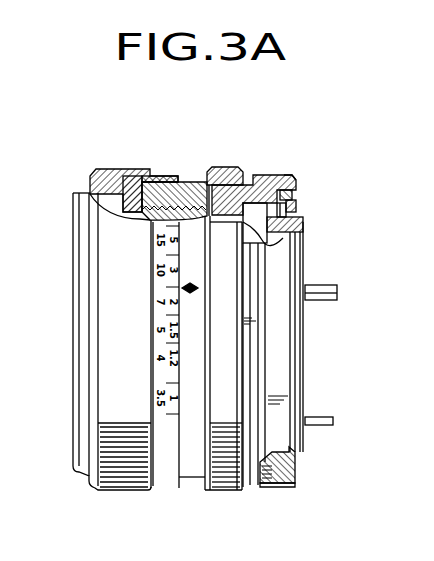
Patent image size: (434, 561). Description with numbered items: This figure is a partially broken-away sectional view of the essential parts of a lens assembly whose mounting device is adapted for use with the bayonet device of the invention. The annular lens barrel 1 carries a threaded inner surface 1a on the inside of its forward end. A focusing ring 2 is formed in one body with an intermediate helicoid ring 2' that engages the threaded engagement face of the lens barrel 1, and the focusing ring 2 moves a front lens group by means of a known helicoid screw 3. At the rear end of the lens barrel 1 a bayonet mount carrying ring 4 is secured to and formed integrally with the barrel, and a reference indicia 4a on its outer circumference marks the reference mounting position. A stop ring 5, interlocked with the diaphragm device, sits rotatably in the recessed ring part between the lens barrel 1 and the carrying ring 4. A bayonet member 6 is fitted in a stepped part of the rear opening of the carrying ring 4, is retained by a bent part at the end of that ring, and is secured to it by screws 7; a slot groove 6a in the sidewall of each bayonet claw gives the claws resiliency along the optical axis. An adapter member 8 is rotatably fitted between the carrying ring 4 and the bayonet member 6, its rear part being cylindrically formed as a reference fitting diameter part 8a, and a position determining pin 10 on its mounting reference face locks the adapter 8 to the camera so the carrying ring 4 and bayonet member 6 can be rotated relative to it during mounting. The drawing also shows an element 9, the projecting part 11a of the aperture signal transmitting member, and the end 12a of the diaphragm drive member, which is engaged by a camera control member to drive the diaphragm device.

The lens barrel 1 is at (190, 181).
The threaded inner surface 1a is at (162, 175).
The focusing ring 2 is at (113, 326).
The intermediate helicoid ring 2' is at (137, 170).
The helicoid screw 3 is at (140, 224).
The bayonet mount carrying ring 4 is at (253, 184).
The reference indicia 4a is at (273, 175).
The stop ring 5 is at (230, 184).
The bayonet member 6 is at (297, 203).
The slot groove 6a is at (294, 192).
The screws 7 is at (277, 488).
The adapter member 8 is at (274, 245).
The reference fitting diameter part 8a is at (298, 450).
The retainer ring 9 is at (305, 240).
The position determining pin 10 is at (296, 209).
The coupling pin 11a is at (338, 293).
The end of diaphragm drive member 12a is at (318, 417).